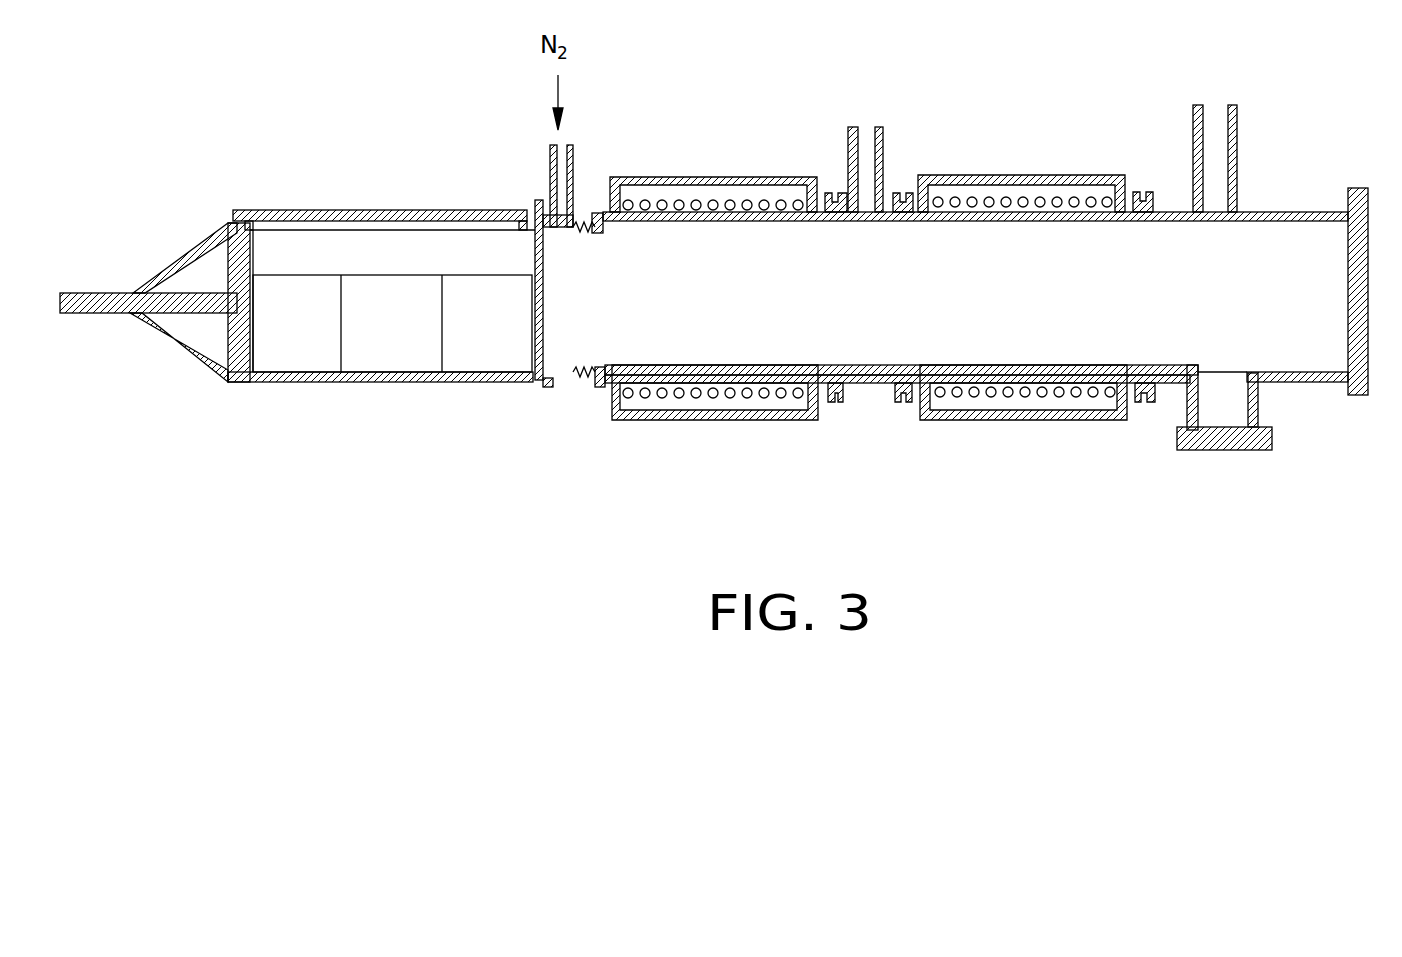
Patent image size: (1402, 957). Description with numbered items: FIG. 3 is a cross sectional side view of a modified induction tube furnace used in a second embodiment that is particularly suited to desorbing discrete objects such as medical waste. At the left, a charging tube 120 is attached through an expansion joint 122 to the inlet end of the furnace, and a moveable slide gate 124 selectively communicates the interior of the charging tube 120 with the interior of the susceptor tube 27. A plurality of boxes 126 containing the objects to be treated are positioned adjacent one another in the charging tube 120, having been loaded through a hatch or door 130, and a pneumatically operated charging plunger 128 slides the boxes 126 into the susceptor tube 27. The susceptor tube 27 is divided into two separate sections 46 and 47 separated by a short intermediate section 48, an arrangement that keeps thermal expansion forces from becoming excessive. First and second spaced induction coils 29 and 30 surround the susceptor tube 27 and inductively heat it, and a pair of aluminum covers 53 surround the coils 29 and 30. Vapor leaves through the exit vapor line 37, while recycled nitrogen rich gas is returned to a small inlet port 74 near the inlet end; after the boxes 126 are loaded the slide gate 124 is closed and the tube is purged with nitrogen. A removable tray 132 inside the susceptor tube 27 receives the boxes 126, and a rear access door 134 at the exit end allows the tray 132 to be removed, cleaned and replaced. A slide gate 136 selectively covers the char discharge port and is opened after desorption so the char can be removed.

The susceptor tube 27 is at (598, 378).
The first induction coil 29 is at (748, 205).
The second induction coil 30 is at (1002, 205).
The exit vapor line 37 is at (883, 143).
The first section of susceptor tube 46 is at (605, 388).
The second section of susceptor tube 47 is at (1130, 402).
The intermediate section 48 is at (860, 385).
The aluminum covers 53 is at (740, 422).
The inlet port 74 is at (572, 160).
The charging tube 120 is at (366, 382).
The expansion joint 122 is at (580, 385).
The slide gate 124 is at (538, 202).
The boxes 126 is at (387, 305).
The charging plunger 128 is at (197, 315).
The hatch or door 130 is at (268, 208).
The removable tray 132 is at (1165, 385).
The rear access door 134 is at (1368, 212).
The slide gate 136 is at (1272, 438).